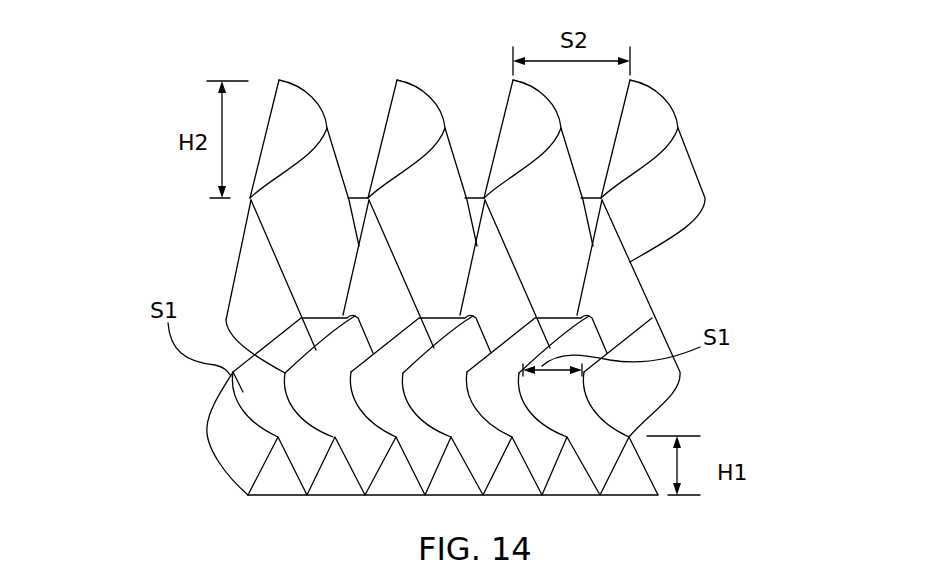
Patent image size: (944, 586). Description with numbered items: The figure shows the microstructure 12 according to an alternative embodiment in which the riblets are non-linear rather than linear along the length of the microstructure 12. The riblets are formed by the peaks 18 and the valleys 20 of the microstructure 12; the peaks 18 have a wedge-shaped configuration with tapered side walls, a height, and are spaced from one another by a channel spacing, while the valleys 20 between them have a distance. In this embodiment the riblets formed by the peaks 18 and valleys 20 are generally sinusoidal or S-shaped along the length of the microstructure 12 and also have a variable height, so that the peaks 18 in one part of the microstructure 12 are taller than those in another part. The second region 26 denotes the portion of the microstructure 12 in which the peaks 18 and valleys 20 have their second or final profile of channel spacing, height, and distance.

The microstructure 12 is at (125, 172).
The peaks 18 is at (236, 360).
The valleys 20 is at (603, 470).
The second region 26 is at (728, 212).